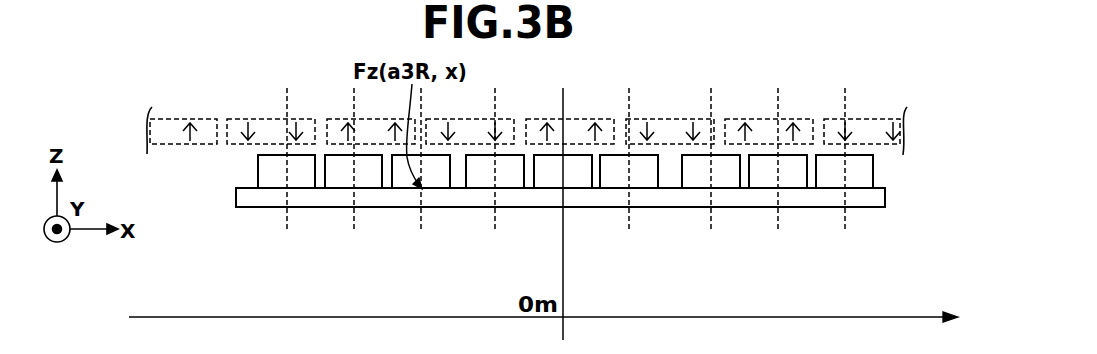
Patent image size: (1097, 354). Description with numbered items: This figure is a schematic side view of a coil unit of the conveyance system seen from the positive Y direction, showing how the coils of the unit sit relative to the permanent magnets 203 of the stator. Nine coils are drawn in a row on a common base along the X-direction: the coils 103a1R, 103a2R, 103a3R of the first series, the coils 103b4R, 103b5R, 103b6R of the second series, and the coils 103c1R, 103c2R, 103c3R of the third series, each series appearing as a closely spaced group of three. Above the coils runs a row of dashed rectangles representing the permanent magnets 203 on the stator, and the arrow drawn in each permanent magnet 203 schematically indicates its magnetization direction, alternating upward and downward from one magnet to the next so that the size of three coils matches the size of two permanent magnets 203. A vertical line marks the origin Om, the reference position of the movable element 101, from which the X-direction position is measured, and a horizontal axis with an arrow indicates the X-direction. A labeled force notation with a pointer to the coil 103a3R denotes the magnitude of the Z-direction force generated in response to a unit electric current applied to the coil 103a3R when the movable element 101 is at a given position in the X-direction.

The movable element 101 is at (885, 197).
The permanent magnet 203 is at (173, 145).
The coil 103a1R is at (270, 188).
The coil 103a2R is at (337, 188).
The coil 103a3R is at (413, 188).
The coil 103b4R is at (482, 188).
The coil 103b5R is at (547, 188).
The coil 103b6R is at (613, 188).
The coil 103c1R is at (700, 188).
The coil 103c2R is at (765, 188).
The coil 103c3R is at (830, 188).